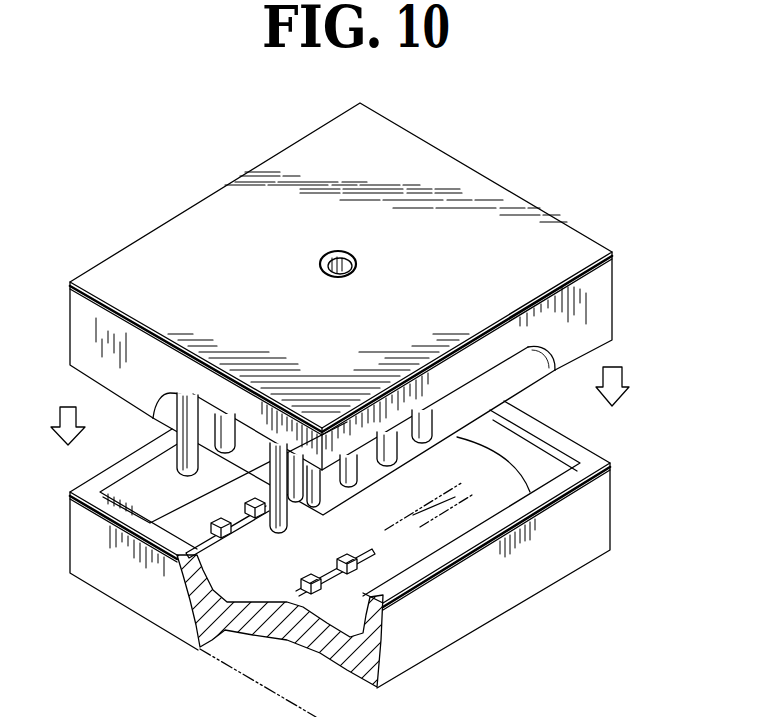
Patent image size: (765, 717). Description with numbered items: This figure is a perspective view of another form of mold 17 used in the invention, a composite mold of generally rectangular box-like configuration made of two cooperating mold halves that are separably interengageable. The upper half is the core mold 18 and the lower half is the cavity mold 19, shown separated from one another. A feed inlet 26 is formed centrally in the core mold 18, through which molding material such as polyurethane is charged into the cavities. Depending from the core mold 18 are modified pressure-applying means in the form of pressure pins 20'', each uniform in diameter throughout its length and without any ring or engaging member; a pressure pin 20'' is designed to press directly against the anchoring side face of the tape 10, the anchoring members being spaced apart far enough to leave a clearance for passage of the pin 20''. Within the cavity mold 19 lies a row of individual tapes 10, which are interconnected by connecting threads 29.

The mold 17 is at (566, 223).
The core mold 18 is at (488, 191).
The feed inlet 26 is at (357, 265).
The pressure pin 20'' is at (261, 488).
The cavity mold 19 is at (563, 568).
The tape 10 is at (351, 553).
The connecting threads 29 is at (303, 581).